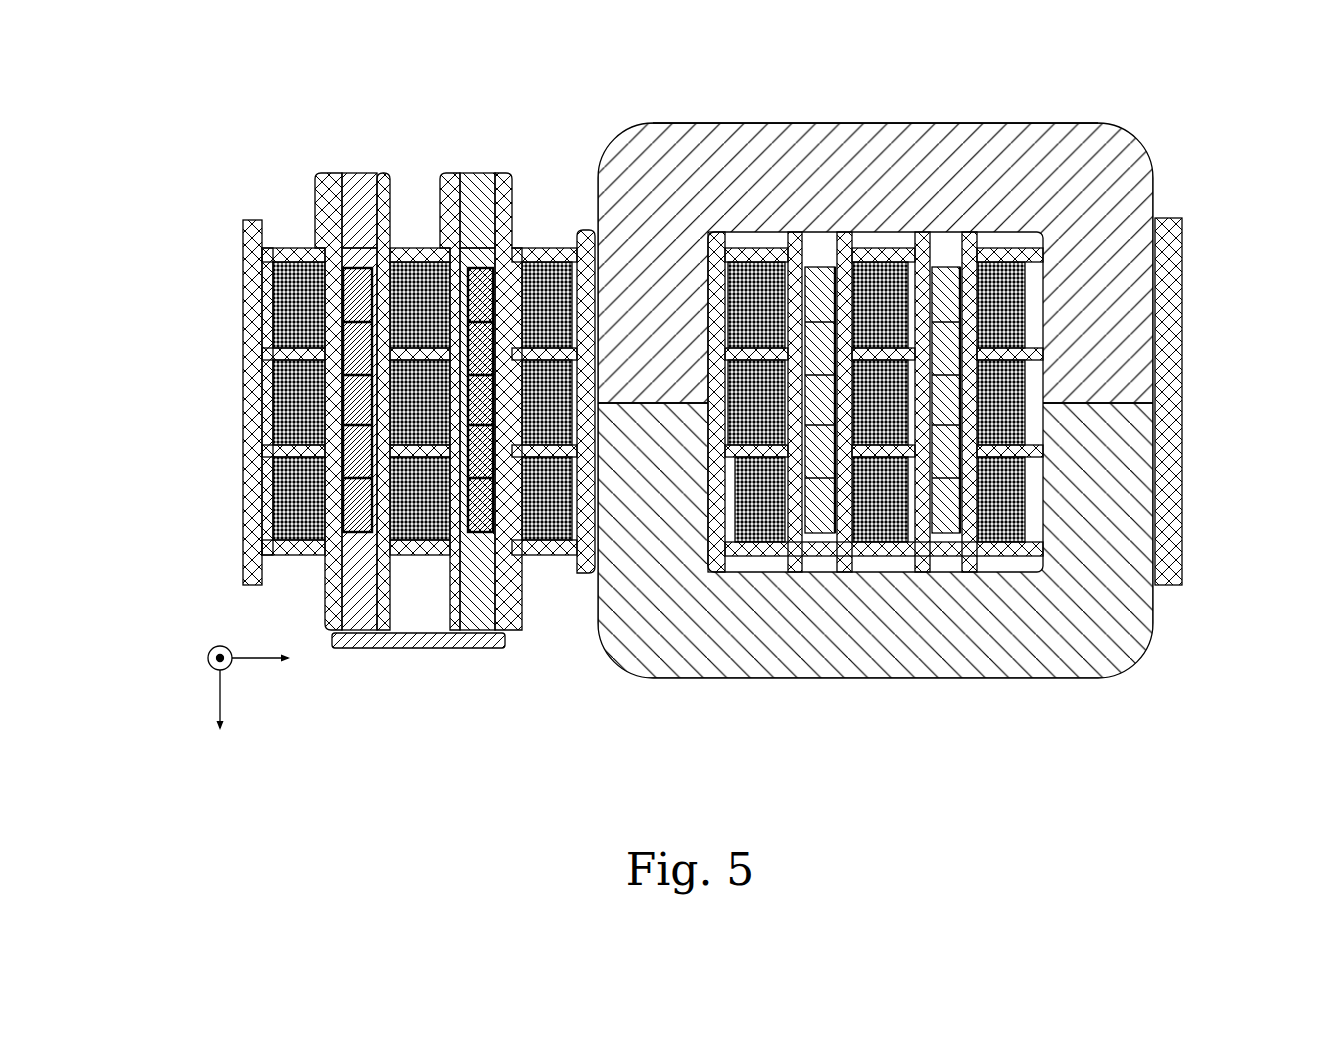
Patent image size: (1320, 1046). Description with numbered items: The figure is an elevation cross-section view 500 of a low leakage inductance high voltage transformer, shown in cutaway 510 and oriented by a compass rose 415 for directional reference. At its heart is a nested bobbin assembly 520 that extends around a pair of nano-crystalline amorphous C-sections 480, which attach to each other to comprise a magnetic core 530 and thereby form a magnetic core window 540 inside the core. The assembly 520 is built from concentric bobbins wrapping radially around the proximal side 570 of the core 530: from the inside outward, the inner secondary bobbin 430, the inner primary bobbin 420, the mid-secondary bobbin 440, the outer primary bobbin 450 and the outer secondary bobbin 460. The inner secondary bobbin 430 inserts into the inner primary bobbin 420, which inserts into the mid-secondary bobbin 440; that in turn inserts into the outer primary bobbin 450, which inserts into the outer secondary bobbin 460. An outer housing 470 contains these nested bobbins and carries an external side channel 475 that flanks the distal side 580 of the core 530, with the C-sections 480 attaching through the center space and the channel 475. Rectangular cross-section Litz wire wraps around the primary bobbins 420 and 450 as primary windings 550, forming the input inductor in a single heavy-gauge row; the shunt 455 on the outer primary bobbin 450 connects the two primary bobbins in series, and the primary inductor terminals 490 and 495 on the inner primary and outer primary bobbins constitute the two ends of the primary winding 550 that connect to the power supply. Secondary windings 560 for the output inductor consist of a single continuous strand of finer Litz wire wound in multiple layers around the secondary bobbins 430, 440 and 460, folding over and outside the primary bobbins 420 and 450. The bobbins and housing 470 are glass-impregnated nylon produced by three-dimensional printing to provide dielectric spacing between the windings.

The elevation cross-section view 500 is at (228, 135).
The compass rose 415 is at (242, 693).
The inner primary bobbin 420 is at (465, 108).
The inner secondary bobbin 430 is at (592, 676).
The mid-secondary bobbin 440 is at (458, 676).
The outer primary bobbin 450 is at (340, 108).
The shunt 455 is at (470, 650).
The outer secondary bobbin 460 is at (348, 676).
The outer housing 470 is at (238, 475).
The external side channel 475 is at (1170, 217).
The C-sections 480 is at (1053, 189).
The primary inductor terminal 490 is at (479, 172).
The primary inductor terminal 495 is at (358, 172).
The cutaway 510 is at (1202, 122).
The nested bobbin assembly 520 is at (242, 741).
The magnetic core 530 is at (772, 122).
The magnetic core window 540 is at (878, 231).
The primary windings 550 is at (343, 517).
The secondary windings 560 is at (273, 487).
The proximal side 570 is at (603, 115).
The distal side 580 is at (1066, 96).